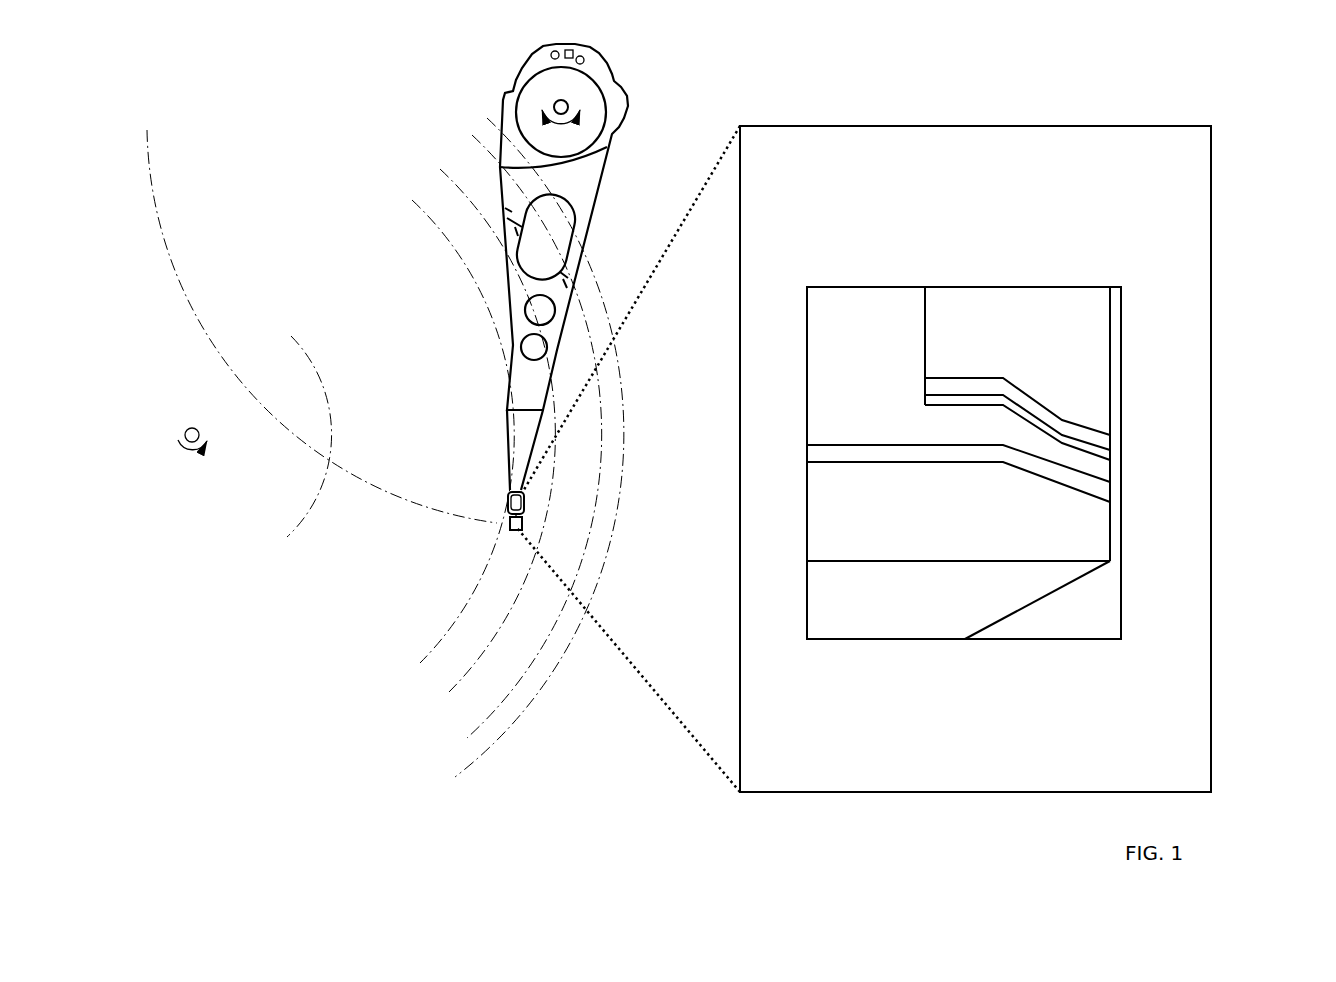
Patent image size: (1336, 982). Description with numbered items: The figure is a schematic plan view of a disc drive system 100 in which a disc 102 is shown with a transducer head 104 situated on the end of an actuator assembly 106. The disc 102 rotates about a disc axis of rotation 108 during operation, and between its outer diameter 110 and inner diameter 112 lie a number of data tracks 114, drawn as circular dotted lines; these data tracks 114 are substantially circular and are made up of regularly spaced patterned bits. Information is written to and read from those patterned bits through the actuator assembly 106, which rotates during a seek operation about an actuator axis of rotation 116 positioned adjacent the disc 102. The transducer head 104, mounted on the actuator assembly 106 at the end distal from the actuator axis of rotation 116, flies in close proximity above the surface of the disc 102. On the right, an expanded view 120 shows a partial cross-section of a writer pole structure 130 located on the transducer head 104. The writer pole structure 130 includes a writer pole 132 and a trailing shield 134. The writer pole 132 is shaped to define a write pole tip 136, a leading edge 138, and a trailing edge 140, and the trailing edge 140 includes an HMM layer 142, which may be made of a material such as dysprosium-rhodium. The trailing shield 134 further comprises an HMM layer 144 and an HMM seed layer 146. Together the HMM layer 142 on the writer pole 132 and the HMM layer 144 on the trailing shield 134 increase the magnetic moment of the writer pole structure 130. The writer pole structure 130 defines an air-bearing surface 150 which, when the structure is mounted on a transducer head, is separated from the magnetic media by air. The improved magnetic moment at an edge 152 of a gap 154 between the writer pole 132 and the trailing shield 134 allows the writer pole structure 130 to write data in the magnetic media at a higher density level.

The hard disk drive system 100 is at (203, 122).
The disc 102 is at (223, 643).
The transducer head 104 is at (510, 528).
The actuator assembly 106 is at (503, 96).
The disc axis of rotation 108 is at (176, 437).
The outer diameter 110 is at (478, 725).
The inner diameter 112 is at (297, 523).
The data tracks 114 is at (428, 680).
The actuator axis of rotation 116 is at (552, 108).
The expanded view 120 is at (810, 792).
The writer pole structure 130 is at (945, 642).
The writer pole 132 is at (808, 503).
The trailing shield 134 is at (990, 362).
The write pole tip 136 is at (1110, 542).
The leading edge 138 is at (1058, 590).
The trailing edge 140 is at (1110, 480).
The HMM layer 142 is at (1110, 500).
The HMM layer 144 is at (1108, 457).
The HMM seed layer 146 is at (1108, 438).
The air-bearing surface 150 is at (1122, 312).
The edge 152 is at (1103, 471).
The gap 154 is at (1017, 432).